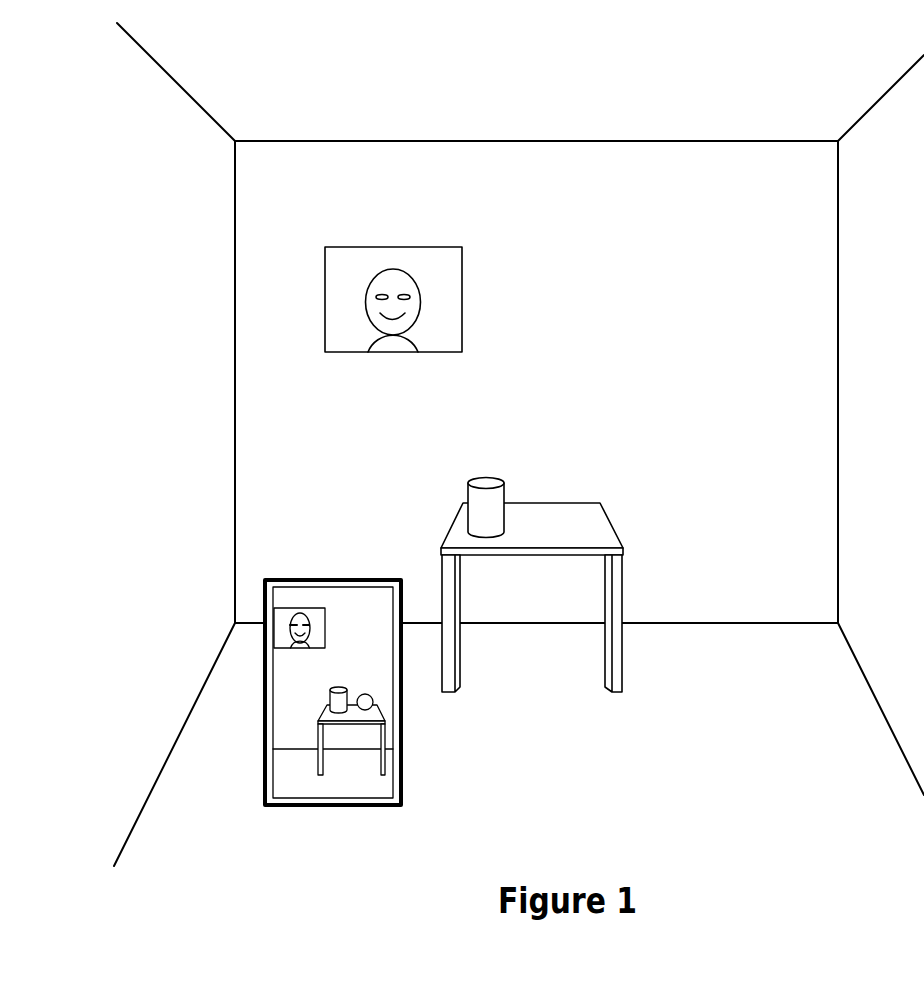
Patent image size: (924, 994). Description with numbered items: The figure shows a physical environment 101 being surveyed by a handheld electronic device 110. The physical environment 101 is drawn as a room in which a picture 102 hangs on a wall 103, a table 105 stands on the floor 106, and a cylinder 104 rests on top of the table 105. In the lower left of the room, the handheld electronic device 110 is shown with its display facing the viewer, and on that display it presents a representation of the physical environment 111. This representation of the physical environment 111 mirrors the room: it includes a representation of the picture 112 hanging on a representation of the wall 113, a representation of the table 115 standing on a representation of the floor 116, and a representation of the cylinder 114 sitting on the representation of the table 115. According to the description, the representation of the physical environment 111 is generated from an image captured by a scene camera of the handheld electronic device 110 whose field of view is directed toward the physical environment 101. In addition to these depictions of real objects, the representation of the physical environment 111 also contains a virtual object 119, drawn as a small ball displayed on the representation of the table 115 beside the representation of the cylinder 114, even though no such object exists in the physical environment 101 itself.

The physical environment 101 is at (823, 120).
The picture 102 is at (433, 247).
The wall 103 is at (617, 340).
The cylinder 104 is at (492, 478).
The table 105 is at (580, 503).
The floor 106 is at (563, 705).
The handheld electronic device 110 is at (332, 578).
The representation of the physical environment 111 is at (383, 675).
The representation of the picture 112 is at (316, 610).
The representation of the wall 113 is at (378, 646).
The representation of the cylinder 114 is at (337, 687).
The representation of the table 115 is at (320, 722).
The representation of the floor 116 is at (370, 787).
The virtual object 119 is at (365, 694).